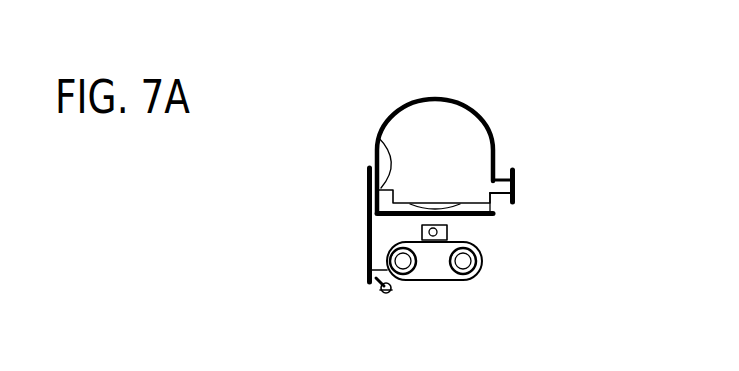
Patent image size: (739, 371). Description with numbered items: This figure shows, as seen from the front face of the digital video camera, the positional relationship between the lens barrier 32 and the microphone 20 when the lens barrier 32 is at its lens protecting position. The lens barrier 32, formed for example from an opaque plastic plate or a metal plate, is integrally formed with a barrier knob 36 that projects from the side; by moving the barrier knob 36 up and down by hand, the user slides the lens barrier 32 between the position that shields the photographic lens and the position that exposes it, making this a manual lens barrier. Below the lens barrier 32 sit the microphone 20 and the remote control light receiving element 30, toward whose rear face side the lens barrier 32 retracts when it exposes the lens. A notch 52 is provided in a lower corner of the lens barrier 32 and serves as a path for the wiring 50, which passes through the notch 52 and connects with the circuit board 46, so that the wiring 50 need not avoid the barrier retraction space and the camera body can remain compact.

The microphone 20 is at (432, 268).
The remote control light receiving element 30 is at (443, 225).
The lens barrier 32 is at (424, 133).
The barrier knob 36 is at (517, 175).
The circuit board 46 is at (367, 237).
The wiring 50 is at (380, 292).
The notch 52 is at (388, 128).